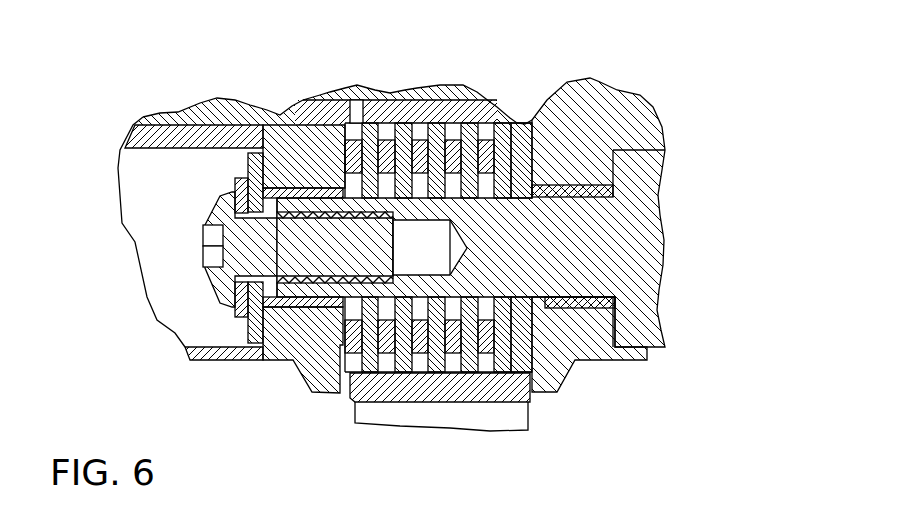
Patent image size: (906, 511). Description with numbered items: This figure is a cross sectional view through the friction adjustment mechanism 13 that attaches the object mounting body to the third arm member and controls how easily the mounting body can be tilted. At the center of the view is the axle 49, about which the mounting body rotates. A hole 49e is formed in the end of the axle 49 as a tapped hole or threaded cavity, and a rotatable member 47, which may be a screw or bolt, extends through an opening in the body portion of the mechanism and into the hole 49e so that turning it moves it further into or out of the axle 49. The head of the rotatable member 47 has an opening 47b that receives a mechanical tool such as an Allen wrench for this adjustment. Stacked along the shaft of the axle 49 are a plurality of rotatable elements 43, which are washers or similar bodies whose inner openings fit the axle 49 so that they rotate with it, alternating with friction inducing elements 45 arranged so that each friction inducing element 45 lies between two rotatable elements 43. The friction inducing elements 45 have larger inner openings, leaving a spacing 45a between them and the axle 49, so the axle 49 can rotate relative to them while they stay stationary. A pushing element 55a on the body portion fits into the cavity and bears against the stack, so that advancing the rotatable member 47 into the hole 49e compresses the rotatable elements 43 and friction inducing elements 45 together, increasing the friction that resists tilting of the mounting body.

The friction adjustment mechanism 13 is at (232, 81).
The rotatable elements 43 is at (403, 178).
The friction inducing elements 45 is at (420, 145).
The spacing 45a is at (533, 188).
The rotatable member 47 is at (217, 283).
The opening 47b is at (208, 237).
The axle 49 is at (648, 215).
The hole 49e is at (433, 268).
The pushing element 55a is at (320, 364).